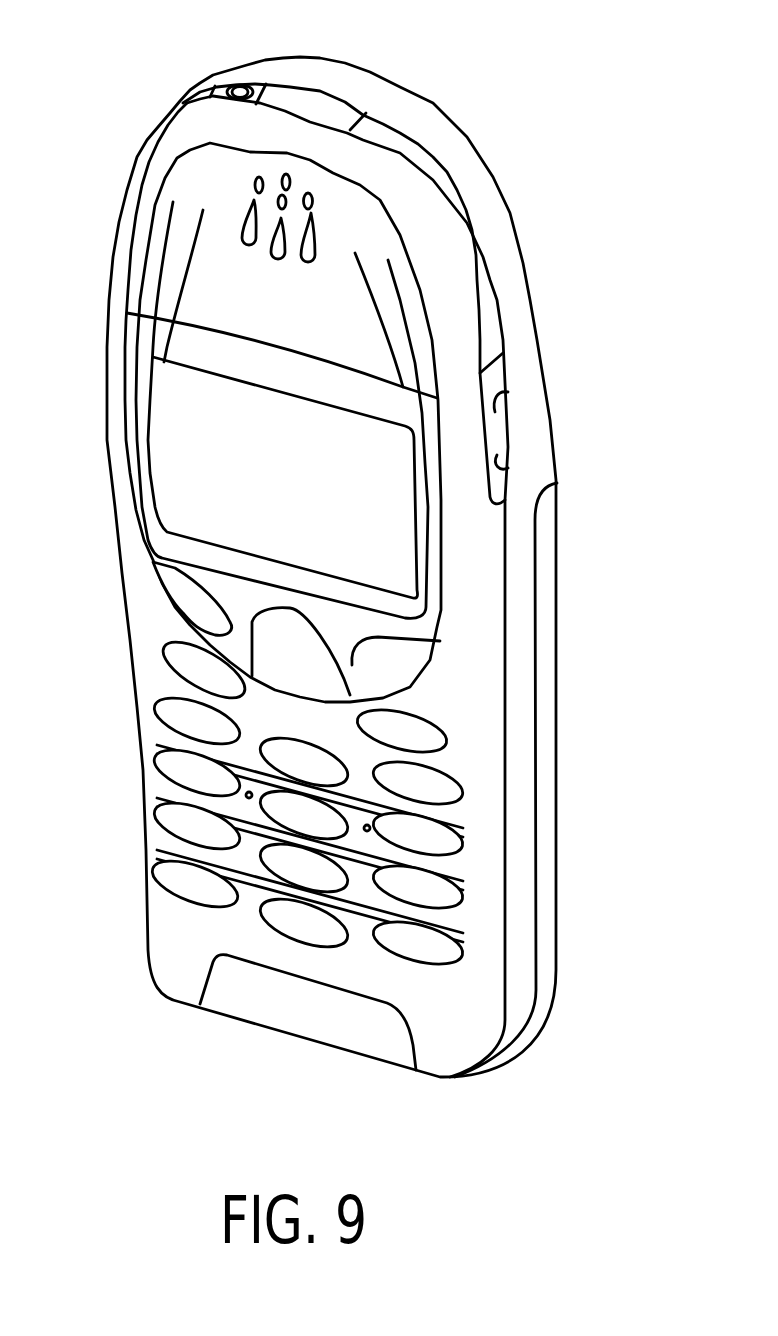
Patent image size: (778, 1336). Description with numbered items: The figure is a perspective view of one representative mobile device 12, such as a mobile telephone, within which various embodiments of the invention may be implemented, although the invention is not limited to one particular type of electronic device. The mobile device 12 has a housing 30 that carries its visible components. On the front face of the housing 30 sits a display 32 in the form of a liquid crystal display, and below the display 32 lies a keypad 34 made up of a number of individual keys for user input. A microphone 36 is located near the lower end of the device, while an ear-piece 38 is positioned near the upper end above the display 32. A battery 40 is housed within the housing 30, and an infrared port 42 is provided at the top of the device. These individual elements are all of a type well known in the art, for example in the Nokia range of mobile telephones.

The mobile device 12 is at (476, 72).
The housing 30 is at (512, 268).
The display 32 is at (387, 530).
The keypad 34 is at (417, 950).
The microphone 36 is at (232, 998).
The ear-piece 38 is at (267, 213).
The battery 40 is at (547, 927).
The infrared port 42 is at (310, 104).